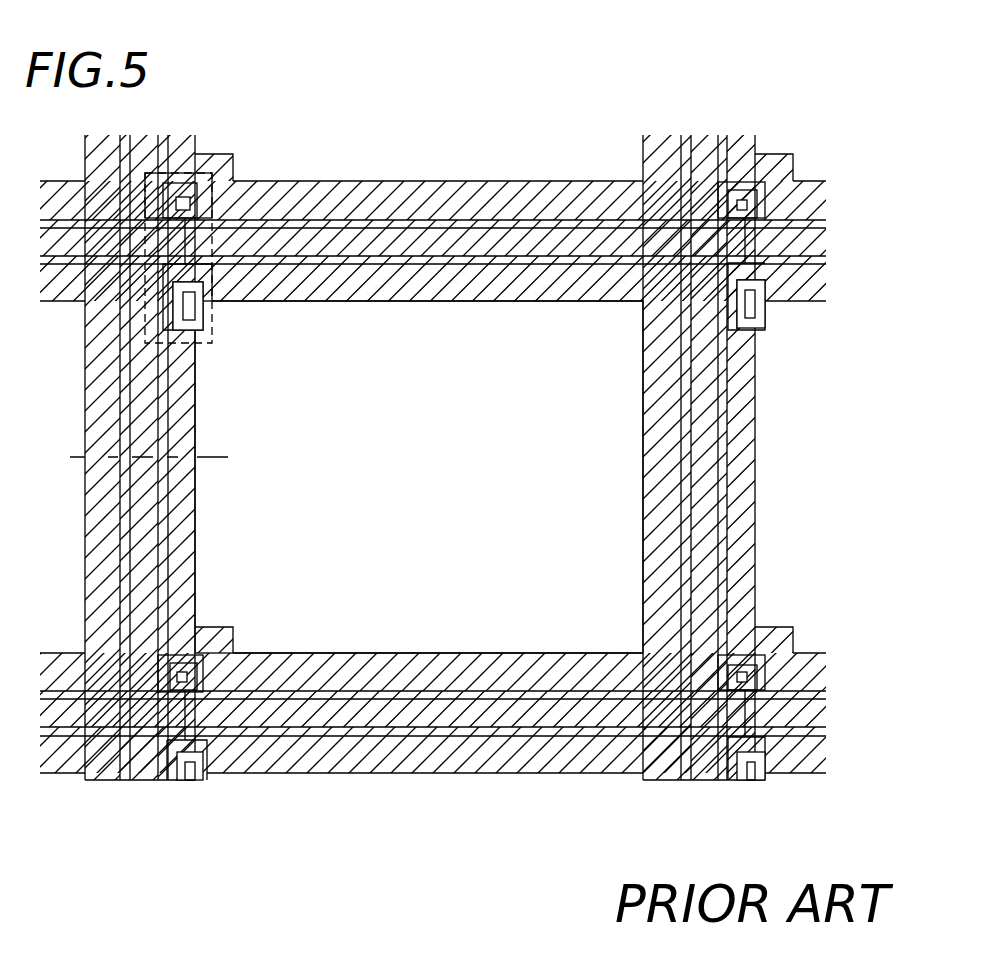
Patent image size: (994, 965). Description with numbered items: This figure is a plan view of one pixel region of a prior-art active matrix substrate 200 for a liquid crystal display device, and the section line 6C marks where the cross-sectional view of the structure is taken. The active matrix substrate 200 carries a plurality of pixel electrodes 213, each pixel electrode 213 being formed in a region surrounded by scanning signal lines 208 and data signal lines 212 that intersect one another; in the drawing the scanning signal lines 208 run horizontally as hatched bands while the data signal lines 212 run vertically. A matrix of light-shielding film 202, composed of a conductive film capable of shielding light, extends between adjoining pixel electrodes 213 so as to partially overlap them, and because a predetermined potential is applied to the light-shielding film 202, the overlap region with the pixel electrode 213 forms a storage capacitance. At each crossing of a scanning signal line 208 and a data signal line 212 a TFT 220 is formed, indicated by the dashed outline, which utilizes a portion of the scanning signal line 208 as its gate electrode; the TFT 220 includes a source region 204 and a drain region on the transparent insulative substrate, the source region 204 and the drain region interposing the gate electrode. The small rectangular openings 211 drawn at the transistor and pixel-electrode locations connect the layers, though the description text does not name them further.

The active matrix substrate 200 is at (425, 432).
The light-shielding film 202 is at (345, 205).
The source region 204 is at (205, 172).
The scanning signal line 208 is at (585, 242).
The contact hole 211 is at (177, 670).
The data signal line 212 is at (155, 592).
The pixel electrode 213 is at (455, 633).
The TFT 220 is at (242, 188).
The section line 6C- 6C is at (150, 460).